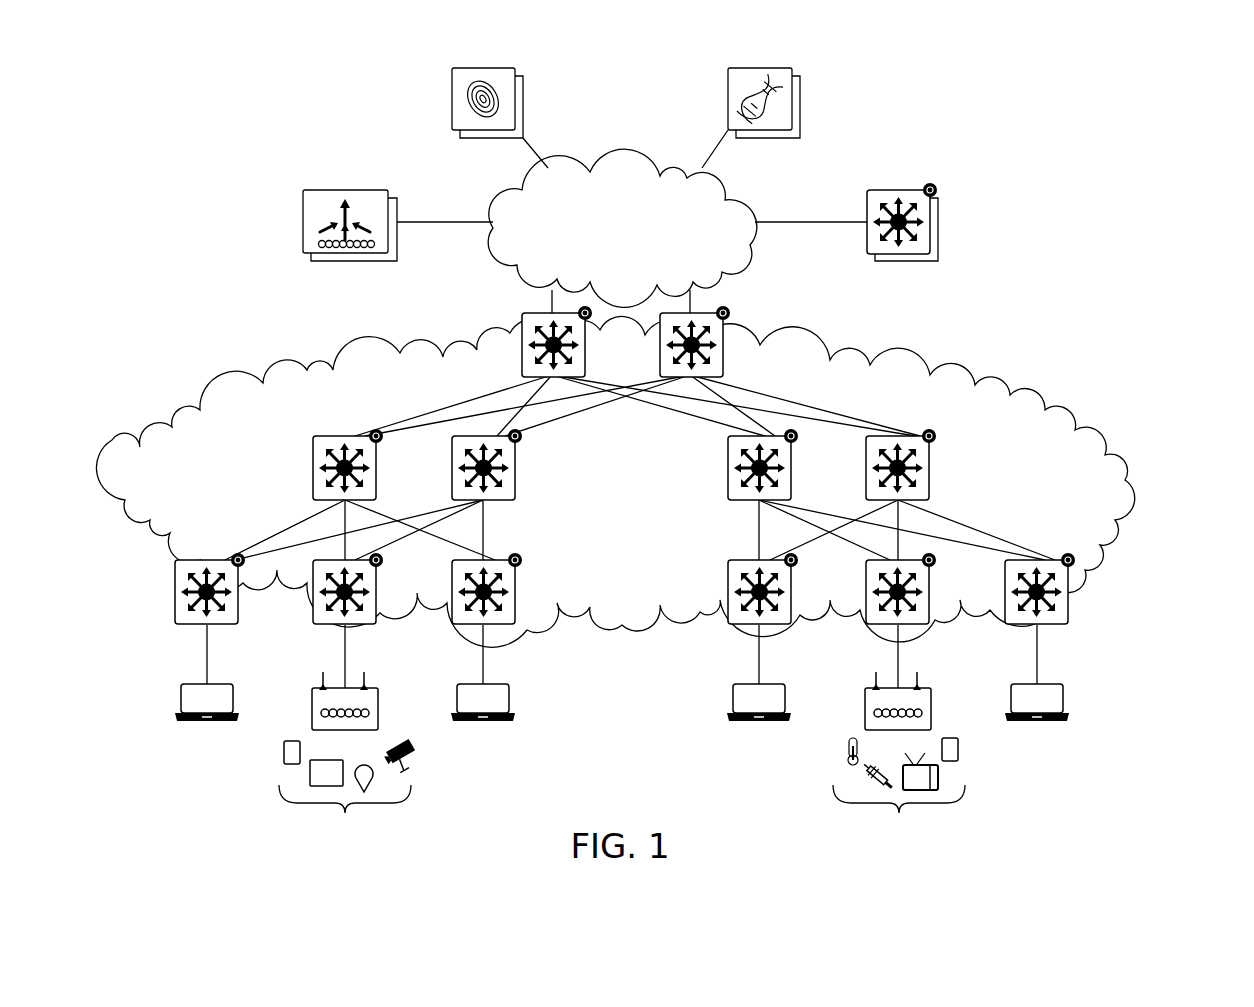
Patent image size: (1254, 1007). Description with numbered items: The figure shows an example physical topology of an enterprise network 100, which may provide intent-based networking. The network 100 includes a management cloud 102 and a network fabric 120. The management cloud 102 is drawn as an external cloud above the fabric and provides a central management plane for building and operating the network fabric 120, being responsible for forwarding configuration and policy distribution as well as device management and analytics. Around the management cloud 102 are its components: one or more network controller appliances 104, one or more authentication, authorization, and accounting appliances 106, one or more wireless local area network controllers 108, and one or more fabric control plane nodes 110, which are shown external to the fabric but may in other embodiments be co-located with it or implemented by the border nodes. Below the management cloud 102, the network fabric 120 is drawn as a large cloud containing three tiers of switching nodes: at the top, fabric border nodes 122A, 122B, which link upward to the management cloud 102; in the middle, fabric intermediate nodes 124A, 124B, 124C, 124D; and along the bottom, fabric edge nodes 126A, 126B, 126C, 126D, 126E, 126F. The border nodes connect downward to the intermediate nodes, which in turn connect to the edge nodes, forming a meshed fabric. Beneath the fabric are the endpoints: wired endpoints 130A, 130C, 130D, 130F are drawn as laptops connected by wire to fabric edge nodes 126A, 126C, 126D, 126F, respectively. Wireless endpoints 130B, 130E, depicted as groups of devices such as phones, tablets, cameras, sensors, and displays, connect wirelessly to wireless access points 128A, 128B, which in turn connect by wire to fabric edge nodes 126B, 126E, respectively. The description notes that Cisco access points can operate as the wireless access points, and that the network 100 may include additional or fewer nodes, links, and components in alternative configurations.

The network 100 is at (1199, 170).
The management cloud 102 is at (622, 228).
The network controller appliance 104 is at (800, 138).
The authentication, authorization, and accounting (AAA) appliance 106 is at (456, 137).
The wireless local area network controller 108 is at (311, 261).
The fabric control plane node 110 is at (938, 261).
The network fabric 120 is at (615, 481).
The fabric border node 122A is at (521, 312).
The fabric border node 122B is at (723, 312).
The fabric intermediate node 124A is at (313, 436).
The fabric intermediate node 124B is at (514, 500).
The fabric intermediate node 124C is at (728, 500).
The fabric intermediate node 124D is at (930, 436).
The fabric edge node 126A is at (175, 625).
The fabric edge node 126B is at (313, 625).
The fabric edge node 126C is at (514, 625).
The fabric edge node 126D is at (728, 625).
The fabric edge node 126E is at (930, 625).
The fabric edge node 126F is at (1068, 625).
The wireless access point 128A is at (378, 688).
The wireless access point 128B is at (866, 688).
The wired endpoint 130A is at (207, 722).
The wireless endpoint 130B is at (350, 792).
The wired endpoint 130C is at (510, 722).
The wired endpoint 130D is at (735, 722).
The wireless endpoint 130E is at (899, 791).
The wired endpoint 130F is at (1040, 722).